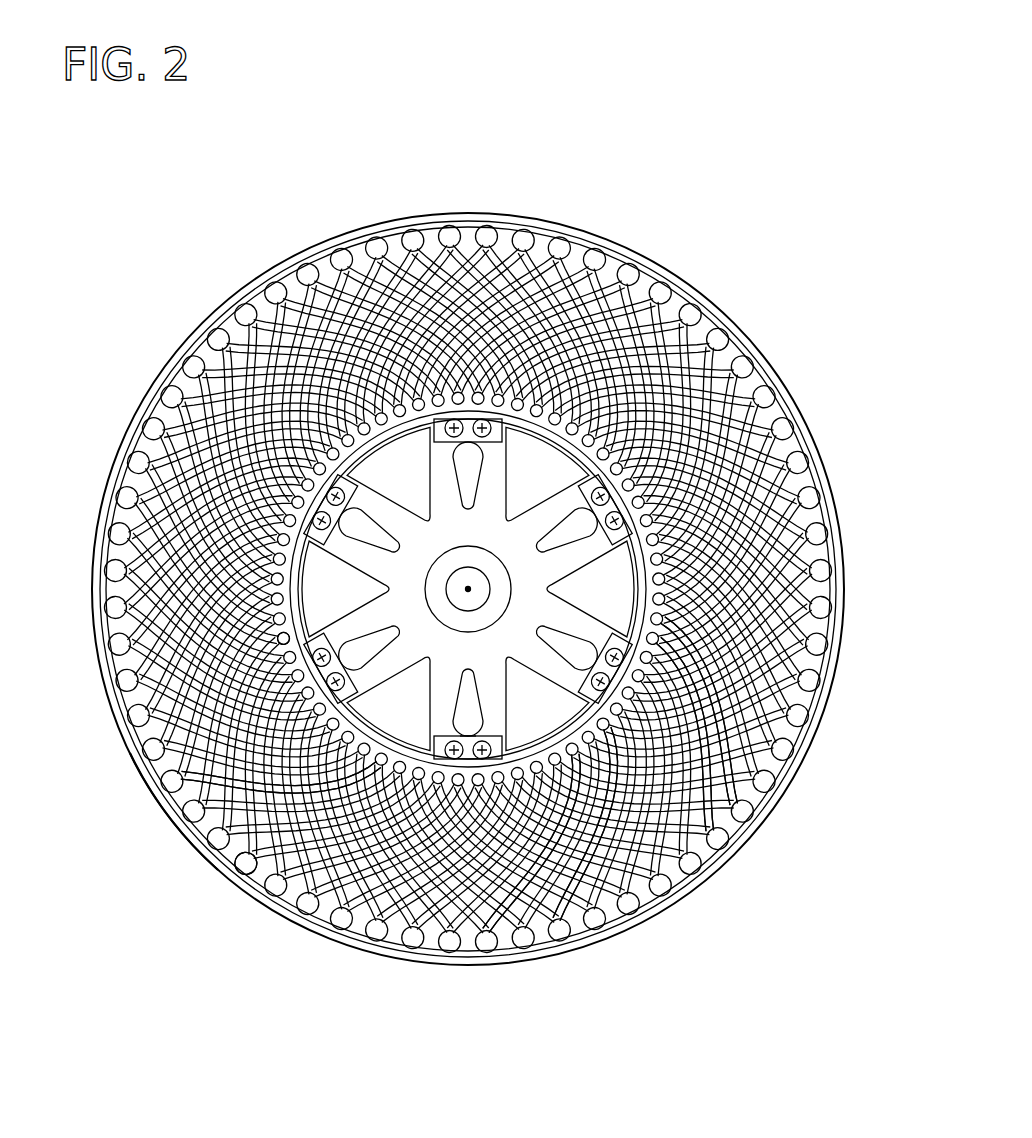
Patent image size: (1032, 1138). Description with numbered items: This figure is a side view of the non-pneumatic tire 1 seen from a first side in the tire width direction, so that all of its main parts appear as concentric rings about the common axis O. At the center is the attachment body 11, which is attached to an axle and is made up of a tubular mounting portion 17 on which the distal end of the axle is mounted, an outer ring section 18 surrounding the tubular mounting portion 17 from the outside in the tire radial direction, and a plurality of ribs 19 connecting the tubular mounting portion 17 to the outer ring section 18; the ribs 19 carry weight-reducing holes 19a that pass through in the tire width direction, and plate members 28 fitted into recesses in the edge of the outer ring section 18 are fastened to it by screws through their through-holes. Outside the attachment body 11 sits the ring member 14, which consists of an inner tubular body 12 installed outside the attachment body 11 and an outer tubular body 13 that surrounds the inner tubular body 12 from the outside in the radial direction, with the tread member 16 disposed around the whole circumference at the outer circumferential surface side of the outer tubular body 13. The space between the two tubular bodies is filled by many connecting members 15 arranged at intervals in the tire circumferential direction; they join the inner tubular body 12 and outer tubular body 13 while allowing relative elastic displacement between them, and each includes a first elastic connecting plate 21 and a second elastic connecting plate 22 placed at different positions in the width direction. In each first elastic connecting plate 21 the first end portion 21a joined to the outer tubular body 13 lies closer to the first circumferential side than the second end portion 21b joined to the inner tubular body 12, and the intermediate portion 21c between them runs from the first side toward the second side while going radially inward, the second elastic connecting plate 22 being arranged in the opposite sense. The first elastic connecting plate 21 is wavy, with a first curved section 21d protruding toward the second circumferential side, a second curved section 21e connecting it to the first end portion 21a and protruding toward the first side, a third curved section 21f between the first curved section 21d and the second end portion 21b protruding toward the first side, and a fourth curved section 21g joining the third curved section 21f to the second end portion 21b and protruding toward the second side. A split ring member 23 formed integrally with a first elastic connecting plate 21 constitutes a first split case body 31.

The non-pneumatic tire 1 is at (794, 98).
The axis O is at (372, 359).
The attachment body 11 is at (613, 646).
The inner tubular body 12 is at (468, 459).
The outer tubular body 13 is at (468, 554).
The ring member 14 is at (468, 534).
The connecting member 15 is at (470, 635).
The tread member 16 is at (468, 538).
The tubular mounting portion 17 is at (593, 646).
The outer ring section 18 is at (591, 589).
The rib 19 is at (655, 514).
The weight-reducing hole 19a is at (542, 873).
The first elastic connecting plate 21 is at (478, 612).
The first end portion 21a is at (220, 905).
The second end portion 21b is at (330, 611).
The intermediate portion 21c is at (244, 795).
The first curved section 21d is at (768, 711).
The second curved section 21e is at (757, 734).
The third curved section 21f is at (633, 828).
The fourth curved section 21g is at (581, 865).
The second elastic connecting plate 22 is at (467, 622).
The split ring member 23 is at (143, 811).
The plate member 28 is at (554, 520).
The first split case body 31 is at (120, 807).